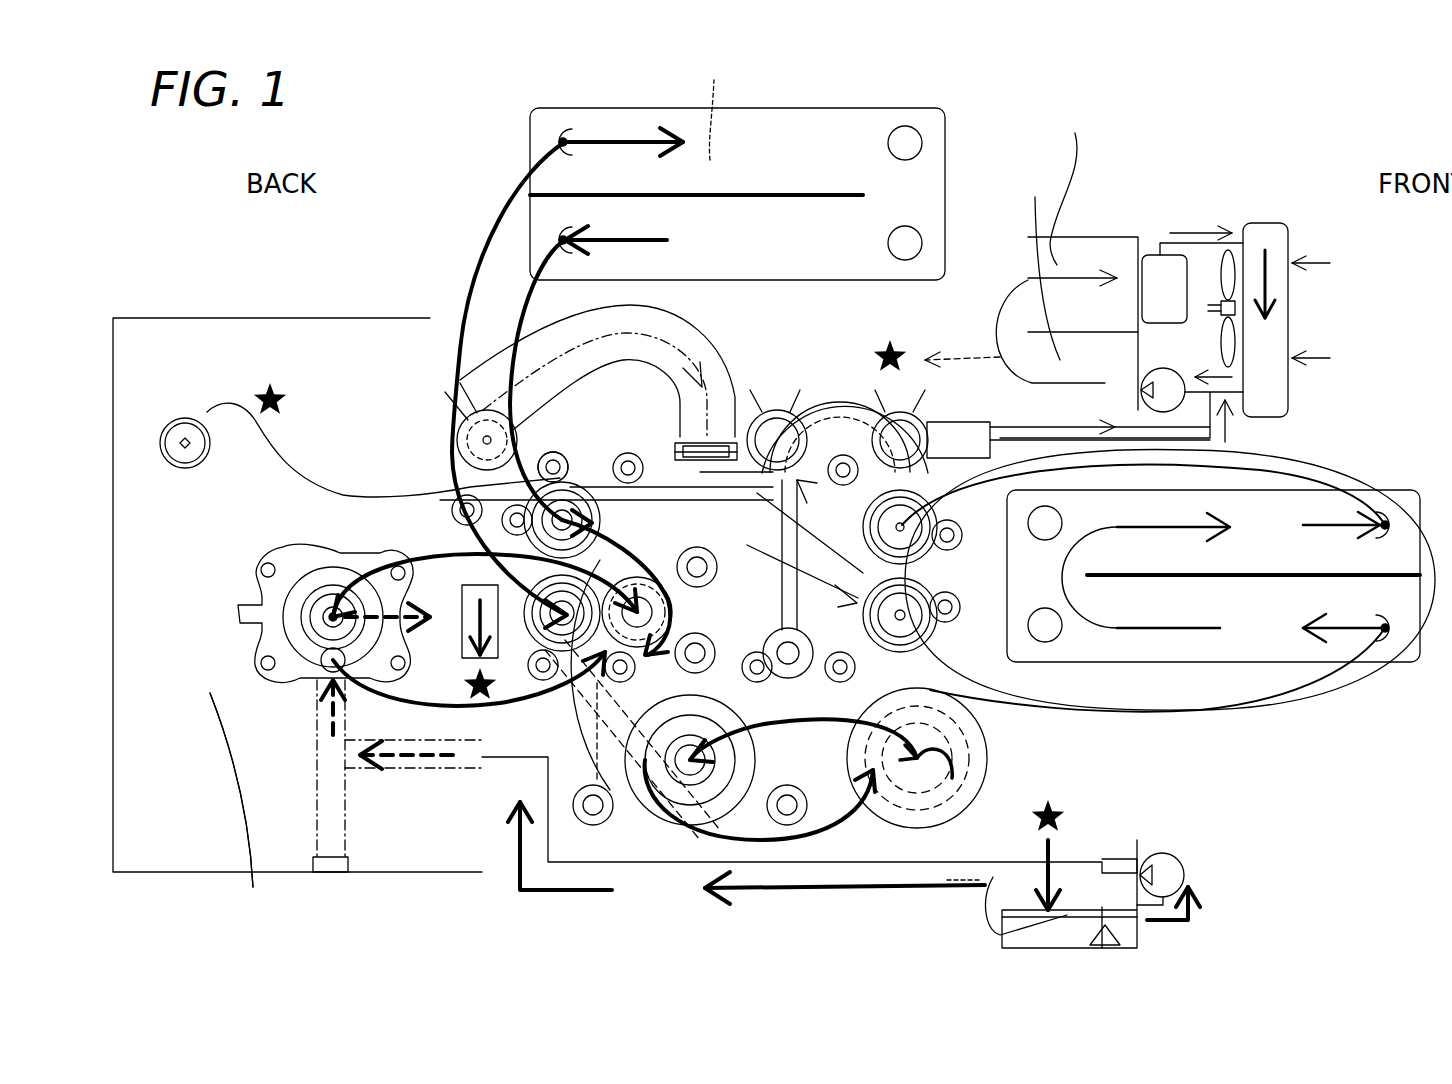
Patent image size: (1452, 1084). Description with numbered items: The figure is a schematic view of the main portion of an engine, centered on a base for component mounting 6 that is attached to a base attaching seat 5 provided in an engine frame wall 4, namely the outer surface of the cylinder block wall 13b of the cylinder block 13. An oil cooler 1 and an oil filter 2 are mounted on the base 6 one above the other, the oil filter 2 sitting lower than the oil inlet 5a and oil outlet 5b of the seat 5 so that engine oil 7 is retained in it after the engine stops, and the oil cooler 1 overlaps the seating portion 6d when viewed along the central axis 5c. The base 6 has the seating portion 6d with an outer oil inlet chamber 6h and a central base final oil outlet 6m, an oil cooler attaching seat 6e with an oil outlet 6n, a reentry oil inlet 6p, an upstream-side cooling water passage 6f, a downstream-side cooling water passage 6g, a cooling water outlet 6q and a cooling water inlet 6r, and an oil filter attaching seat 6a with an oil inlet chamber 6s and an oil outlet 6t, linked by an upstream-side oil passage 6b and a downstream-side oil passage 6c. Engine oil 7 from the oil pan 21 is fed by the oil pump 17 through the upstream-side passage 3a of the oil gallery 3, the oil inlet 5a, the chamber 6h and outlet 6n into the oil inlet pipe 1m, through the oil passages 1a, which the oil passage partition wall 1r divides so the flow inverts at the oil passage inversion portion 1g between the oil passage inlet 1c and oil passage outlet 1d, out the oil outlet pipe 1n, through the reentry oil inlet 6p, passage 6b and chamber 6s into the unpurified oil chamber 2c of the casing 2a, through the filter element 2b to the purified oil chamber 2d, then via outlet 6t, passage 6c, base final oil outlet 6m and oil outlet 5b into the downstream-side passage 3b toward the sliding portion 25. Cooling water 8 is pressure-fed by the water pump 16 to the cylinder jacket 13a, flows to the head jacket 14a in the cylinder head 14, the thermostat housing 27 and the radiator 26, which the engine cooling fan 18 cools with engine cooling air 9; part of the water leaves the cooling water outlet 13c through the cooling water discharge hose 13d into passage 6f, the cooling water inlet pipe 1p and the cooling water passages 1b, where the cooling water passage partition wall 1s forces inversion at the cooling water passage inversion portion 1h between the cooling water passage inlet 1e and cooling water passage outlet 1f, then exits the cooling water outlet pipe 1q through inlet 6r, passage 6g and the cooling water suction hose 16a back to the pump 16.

The oil cooler 1 is at (945, 170).
The oil passages 1a is at (720, 102).
The cooling water passages 1b is at (1257, 537).
The oil passage inlet 1c is at (576, 150).
The oil passage outlet 1d is at (576, 250).
The cooling water passage inlet 1e is at (1372, 620).
The cooling water passage outlet 1f is at (1373, 532).
The oil passage inversion portion 1g is at (920, 190).
The cooling water passage inversion portion 1h is at (1020, 600).
The oil inlet pipe 1m is at (553, 140).
The oil outlet pipe 1n is at (553, 240).
The cooling water inlet pipe 1p is at (921, 247).
The cooling water outlet pipe 1q is at (921, 140).
The oil passage partition wall 1r is at (757, 195).
The cooling water passage partition wall 1s is at (1137, 575).
The oil filter 2 is at (990, 758).
The casing 2a is at (968, 778).
The filter element 2b is at (945, 730).
The unpurified oil chamber 2c is at (945, 822).
The purified oil chamber 2d is at (868, 702).
The oil gallery 3 is at (1078, 857).
The upstream-side passage 3a is at (415, 738).
The downstream-side passage 3b is at (462, 605).
The engine frame wall 4 is at (231, 790).
The base attaching seat 5 is at (270, 605).
The oil inlet 5a is at (325, 672).
The oil outlet 5b is at (325, 605).
The central axis 5c is at (330, 625).
The base for component mounting 6 is at (600, 735).
The oil filter attaching seat 6a is at (640, 808).
The upstream-side oil passage 6b is at (590, 690).
The downstream-side oil passage 6c is at (785, 675).
The seating portion 6d is at (642, 578).
The oil cooler attaching seat 6e is at (663, 478).
The upstream-side cooling water passage 6f is at (800, 668).
The downstream-side cooling water passage 6g is at (918, 428).
The oil inlet chamber 6h is at (760, 588).
The base final oil outlet 6m is at (572, 508).
The oil outlet 6n is at (572, 447).
The reentry oil inlet 6p is at (545, 608).
The cooling water outlet 6q is at (915, 610).
The cooling water inlet 6r is at (930, 520).
The oil inlet chamber 6s is at (688, 805).
The oil outlet 6t is at (722, 808).
The engine oil 7 is at (742, 240).
The cooling water 8 is at (240, 410).
The engine cooling air 9 is at (1330, 300).
The cylinder block 13 is at (195, 835).
The cylinder jacket 13a is at (1050, 269).
The cylinder block wall 13b is at (250, 887).
The cooling water outlet 13c is at (183, 420).
The cooling water discharge hose 13d is at (548, 362).
The cylinder head 14 is at (1060, 233).
The head jacket 14a is at (1075, 181).
The water pump 16 is at (1172, 380).
The cooling water suction hose 16a is at (848, 395).
The oil pump 17 is at (1163, 853).
The engine cooling fan 18 is at (1222, 297).
The oil pan 21 is at (1140, 933).
The sliding portion 25 is at (501, 649).
The radiator 26 is at (1275, 242).
The thermostat housing 27 is at (1160, 258).